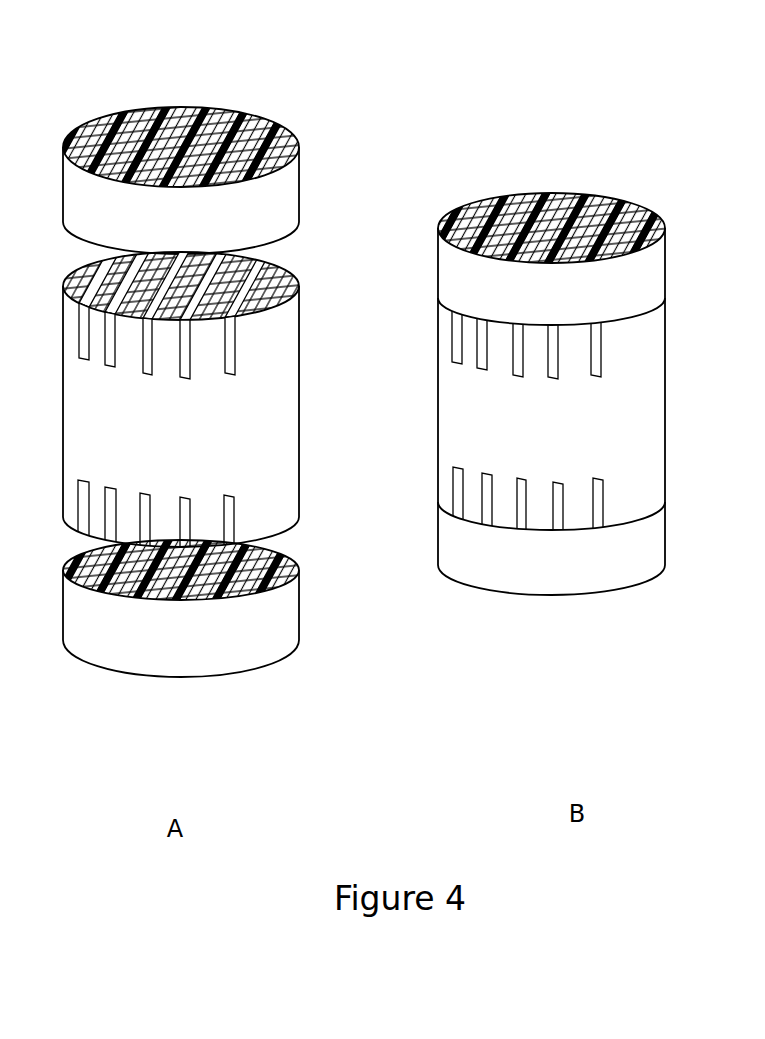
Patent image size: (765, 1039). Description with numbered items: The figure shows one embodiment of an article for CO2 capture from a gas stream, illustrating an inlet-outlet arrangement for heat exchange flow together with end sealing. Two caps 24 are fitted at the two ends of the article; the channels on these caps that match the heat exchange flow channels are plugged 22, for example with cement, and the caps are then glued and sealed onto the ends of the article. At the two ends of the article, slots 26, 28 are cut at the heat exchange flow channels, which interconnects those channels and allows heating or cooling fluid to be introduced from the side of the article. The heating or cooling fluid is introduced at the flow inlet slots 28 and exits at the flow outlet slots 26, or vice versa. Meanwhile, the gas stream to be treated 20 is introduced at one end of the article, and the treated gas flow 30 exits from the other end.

The gas stream to be treated 20 is at (188, 89).
The plugged channels 22 is at (493, 198).
The caps 24 is at (437, 260).
The flow outlet slots 26 is at (237, 345).
The flow inlet slots 28 is at (237, 492).
The treated gas flow 30 is at (175, 688).